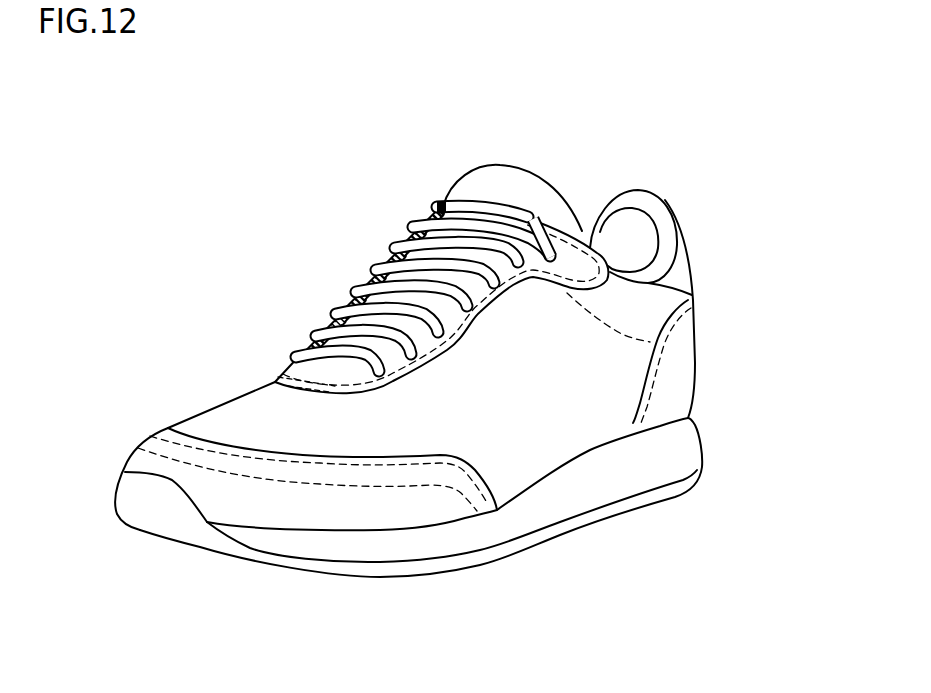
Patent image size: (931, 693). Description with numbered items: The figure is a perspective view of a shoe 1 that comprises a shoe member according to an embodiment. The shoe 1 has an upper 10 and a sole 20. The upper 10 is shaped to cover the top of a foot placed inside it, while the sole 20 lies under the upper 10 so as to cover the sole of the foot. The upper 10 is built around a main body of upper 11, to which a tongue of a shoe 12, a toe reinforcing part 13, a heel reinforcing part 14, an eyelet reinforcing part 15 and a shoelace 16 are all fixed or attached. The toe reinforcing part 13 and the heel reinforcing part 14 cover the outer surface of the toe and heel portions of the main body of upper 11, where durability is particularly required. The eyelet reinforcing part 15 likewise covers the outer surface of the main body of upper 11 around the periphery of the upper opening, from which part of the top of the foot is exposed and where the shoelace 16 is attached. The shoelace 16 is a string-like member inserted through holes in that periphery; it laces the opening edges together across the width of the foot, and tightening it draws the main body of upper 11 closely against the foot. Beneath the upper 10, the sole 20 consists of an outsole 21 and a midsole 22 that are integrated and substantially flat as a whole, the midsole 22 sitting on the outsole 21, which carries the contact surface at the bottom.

The shoe 1 is at (762, 114).
The upper 10 is at (398, 189).
The main body of upper 11 is at (562, 402).
The tongue of a shoe 12 is at (503, 187).
The toe reinforcing part 13 is at (290, 510).
The heel reinforcing part 14 is at (677, 368).
The eyelet reinforcing part 15 is at (572, 267).
The shoelace 16 is at (344, 327).
The sole 20 is at (694, 535).
The outsole 21 is at (500, 548).
The midsole 22 is at (570, 493).